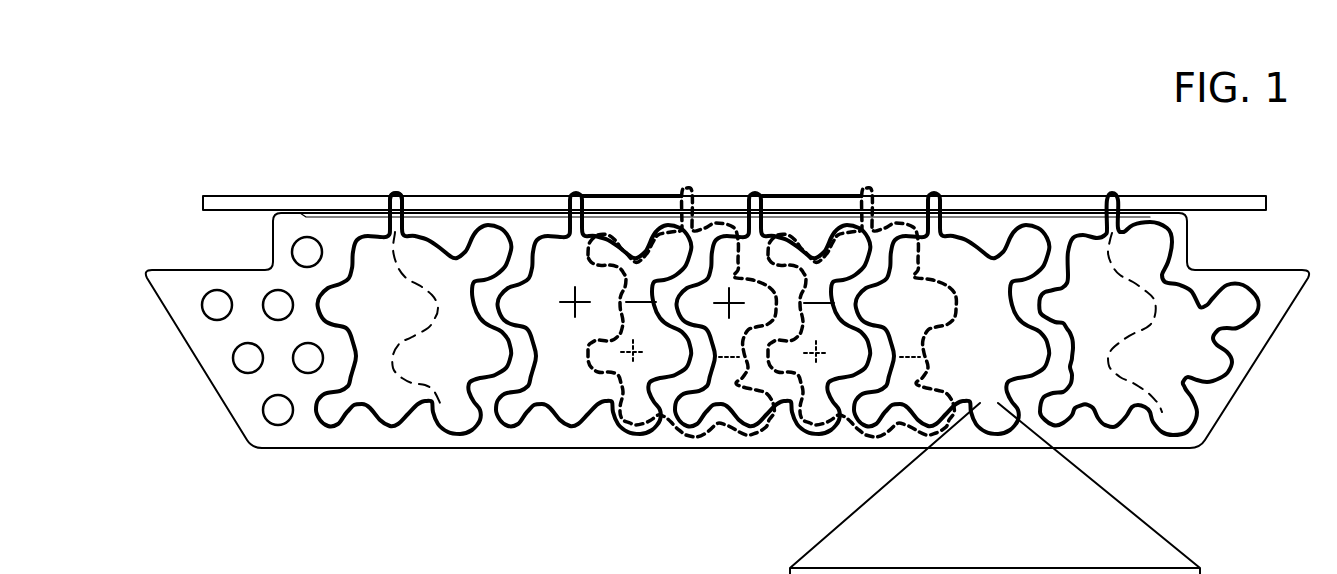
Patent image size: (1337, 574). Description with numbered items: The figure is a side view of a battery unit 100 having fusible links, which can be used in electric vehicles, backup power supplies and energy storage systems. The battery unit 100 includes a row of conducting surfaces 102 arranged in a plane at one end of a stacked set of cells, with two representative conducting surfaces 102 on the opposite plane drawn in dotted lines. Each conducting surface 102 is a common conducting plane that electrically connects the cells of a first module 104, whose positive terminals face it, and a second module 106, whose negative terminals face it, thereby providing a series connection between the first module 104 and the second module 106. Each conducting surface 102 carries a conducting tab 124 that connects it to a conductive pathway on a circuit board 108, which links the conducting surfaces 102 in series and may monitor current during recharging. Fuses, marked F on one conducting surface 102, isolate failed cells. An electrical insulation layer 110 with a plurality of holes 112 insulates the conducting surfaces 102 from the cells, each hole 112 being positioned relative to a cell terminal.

The battery unit 100 is at (222, 107).
The conducting surface 102 is at (394, 344).
The first module 104 is at (396, 317).
The second module 106 is at (450, 360).
The circuit board 108 is at (1065, 195).
The electrical insulation layer 110 is at (596, 445).
The holes 112 is at (227, 388).
The conducting tab 124 is at (390, 195).